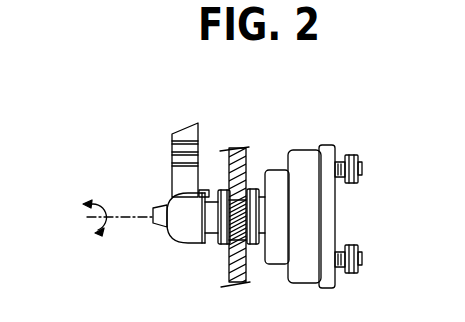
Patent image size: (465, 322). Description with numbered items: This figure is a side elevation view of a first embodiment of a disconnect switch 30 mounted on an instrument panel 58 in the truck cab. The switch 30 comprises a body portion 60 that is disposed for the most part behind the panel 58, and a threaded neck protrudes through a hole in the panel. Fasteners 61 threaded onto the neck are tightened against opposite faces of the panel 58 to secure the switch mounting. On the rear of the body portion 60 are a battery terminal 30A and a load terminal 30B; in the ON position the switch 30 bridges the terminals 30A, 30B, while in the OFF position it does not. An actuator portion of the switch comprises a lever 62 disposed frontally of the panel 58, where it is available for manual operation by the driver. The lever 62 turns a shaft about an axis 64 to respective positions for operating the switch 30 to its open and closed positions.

The disconnect switch 30 is at (358, 174).
The battery terminal 30A is at (368, 167).
The load terminal 30B is at (362, 258).
The instrument panel 58 is at (238, 140).
The body portion 60 is at (300, 150).
The fasteners 61 is at (218, 190).
The lever 62 is at (170, 185).
The axis 64 is at (87, 217).